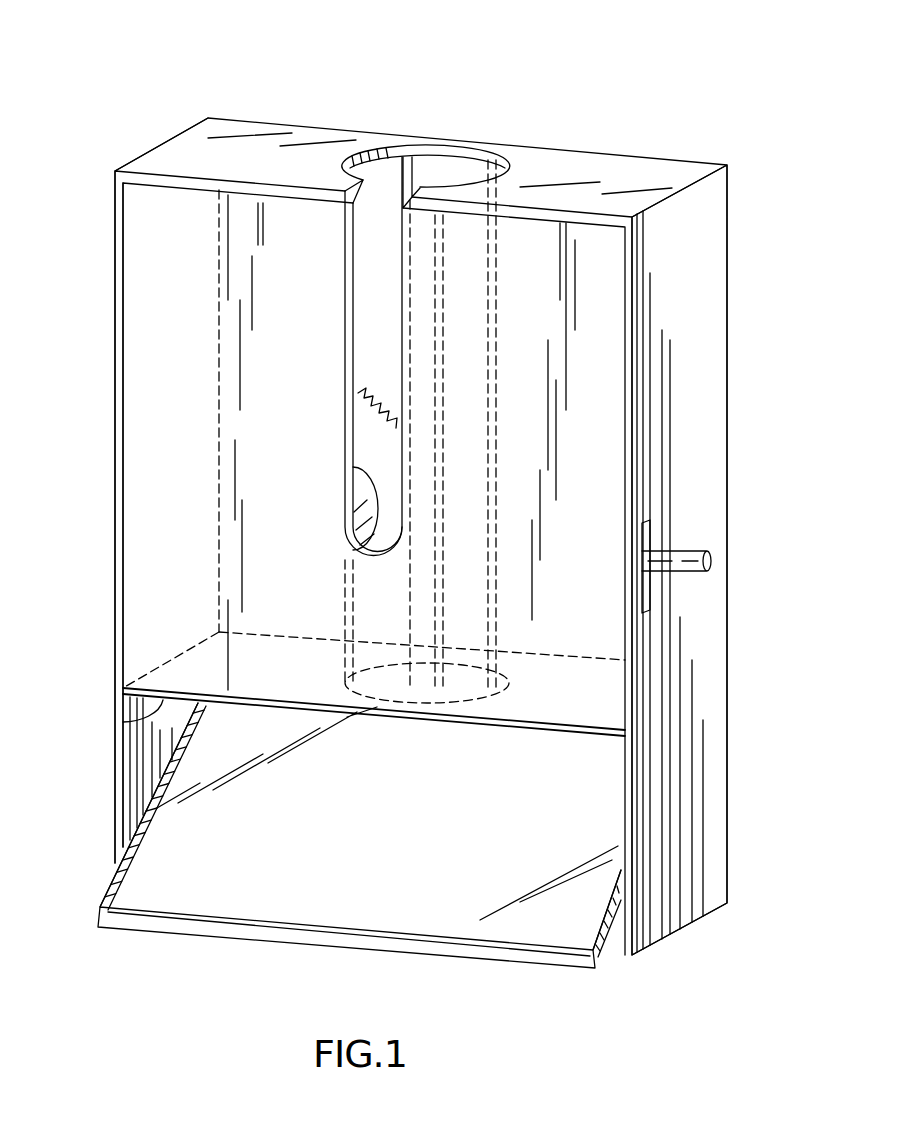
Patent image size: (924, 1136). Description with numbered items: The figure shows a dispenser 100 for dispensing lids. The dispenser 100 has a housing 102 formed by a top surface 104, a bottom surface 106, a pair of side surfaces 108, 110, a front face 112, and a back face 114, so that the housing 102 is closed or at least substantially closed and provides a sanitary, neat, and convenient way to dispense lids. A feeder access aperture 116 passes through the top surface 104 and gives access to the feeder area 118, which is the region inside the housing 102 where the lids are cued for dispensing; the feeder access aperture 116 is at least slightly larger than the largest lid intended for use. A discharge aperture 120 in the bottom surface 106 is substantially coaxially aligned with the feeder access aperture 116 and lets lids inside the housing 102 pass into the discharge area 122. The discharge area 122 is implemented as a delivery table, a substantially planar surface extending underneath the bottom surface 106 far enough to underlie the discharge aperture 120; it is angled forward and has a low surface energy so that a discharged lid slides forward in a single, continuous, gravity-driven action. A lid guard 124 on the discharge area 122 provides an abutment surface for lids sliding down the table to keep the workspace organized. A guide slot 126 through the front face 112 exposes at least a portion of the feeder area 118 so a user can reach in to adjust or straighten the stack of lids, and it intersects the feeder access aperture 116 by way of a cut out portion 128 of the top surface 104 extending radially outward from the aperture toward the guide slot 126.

The dispenser 100 is at (729, 94).
The housing 102 is at (148, 153).
The top surface 104 is at (310, 133).
The bottom surface 106 is at (126, 722).
The side surface 108 is at (118, 460).
The side surface 110 is at (714, 425).
The front face 112 is at (165, 318).
The back face 114 is at (727, 322).
The feeder access aperture 116 is at (441, 170).
The feeder area 118 is at (380, 281).
The discharge aperture 120 is at (459, 706).
The discharge area 122 is at (178, 843).
The lid guard 124 is at (160, 778).
The guide slot 126 is at (378, 340).
The cut out portion 128 is at (381, 194).